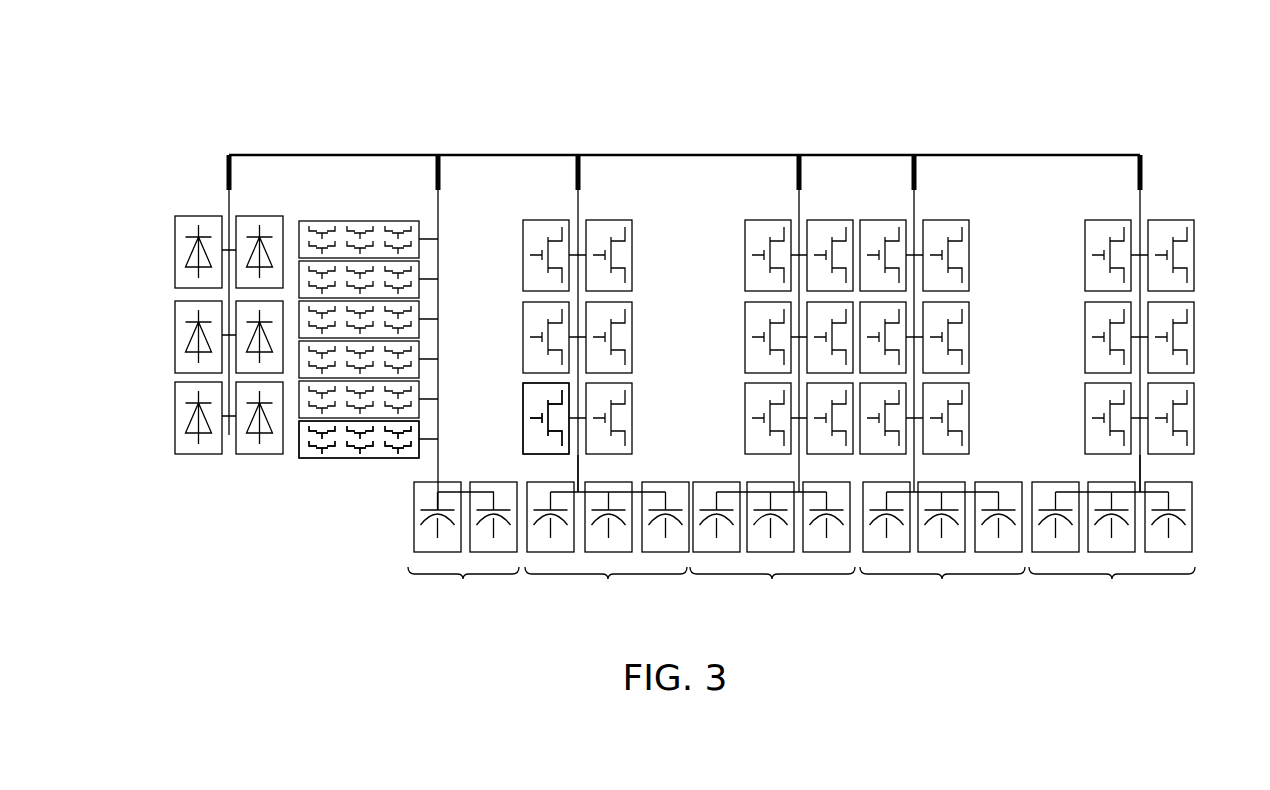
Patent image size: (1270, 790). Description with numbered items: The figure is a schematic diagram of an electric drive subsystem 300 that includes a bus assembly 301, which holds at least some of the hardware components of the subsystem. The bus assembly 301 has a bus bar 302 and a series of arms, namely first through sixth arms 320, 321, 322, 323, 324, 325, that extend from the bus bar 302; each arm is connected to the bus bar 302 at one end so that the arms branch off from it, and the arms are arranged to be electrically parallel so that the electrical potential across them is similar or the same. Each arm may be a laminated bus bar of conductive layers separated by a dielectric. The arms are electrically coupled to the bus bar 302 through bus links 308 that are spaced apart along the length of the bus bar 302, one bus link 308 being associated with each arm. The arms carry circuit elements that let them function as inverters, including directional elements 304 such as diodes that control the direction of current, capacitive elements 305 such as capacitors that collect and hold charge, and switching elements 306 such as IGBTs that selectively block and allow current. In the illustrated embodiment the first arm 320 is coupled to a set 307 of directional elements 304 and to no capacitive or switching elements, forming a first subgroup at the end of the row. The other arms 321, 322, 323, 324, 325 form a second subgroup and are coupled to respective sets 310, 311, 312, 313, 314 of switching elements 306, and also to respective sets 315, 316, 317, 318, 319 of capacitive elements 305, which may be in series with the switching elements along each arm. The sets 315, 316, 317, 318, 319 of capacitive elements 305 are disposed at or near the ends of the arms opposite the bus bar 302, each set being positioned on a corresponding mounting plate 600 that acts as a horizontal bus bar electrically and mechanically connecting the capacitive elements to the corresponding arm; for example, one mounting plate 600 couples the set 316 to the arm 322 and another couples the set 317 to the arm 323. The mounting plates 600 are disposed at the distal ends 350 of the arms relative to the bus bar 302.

The electric drive subsystem 300 is at (283, 93).
The bus assembly 301 is at (685, 128).
The bus bar 302 is at (492, 155).
The directional element 304 is at (178, 332).
The capacitive element 305 is at (414, 540).
The switching element 306 is at (300, 455).
The set of directional elements 307 is at (194, 346).
The bus link 308 is at (227, 172).
The set of switching elements 310 is at (342, 470).
The set of switching elements 311 is at (510, 312).
The set of switching elements 312 is at (735, 312).
The set of switching elements 313 is at (983, 315).
The set of switching elements 314 is at (1073, 316).
The set of capacitive elements 315 is at (430, 544).
The set of capacitive elements 316 is at (607, 544).
The set of capacitive elements 317 is at (772, 544).
The set of capacitive elements 318 is at (942, 544).
The set of capacitive elements 319 is at (1112, 544).
The first arm 320 is at (231, 194).
The second arm 321 is at (440, 195).
The third arm 322 is at (580, 195).
The fourth arm 323 is at (801, 195).
The fifth arm 324 is at (916, 195).
The sixth arm 325 is at (1142, 195).
The distal end 350 is at (577, 490).
The mounting plate 600 is at (637, 492).